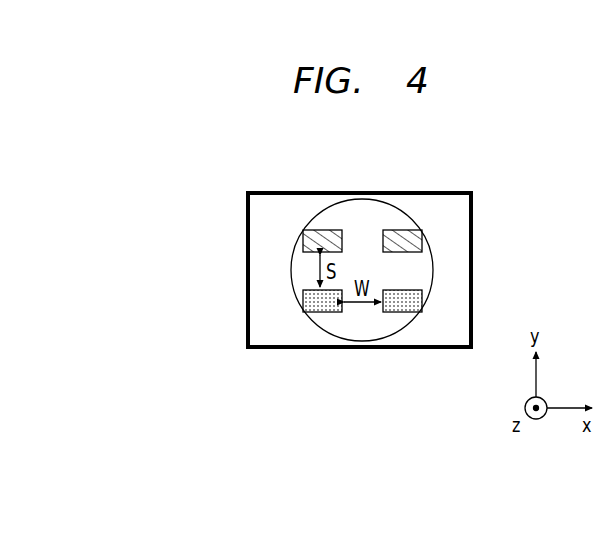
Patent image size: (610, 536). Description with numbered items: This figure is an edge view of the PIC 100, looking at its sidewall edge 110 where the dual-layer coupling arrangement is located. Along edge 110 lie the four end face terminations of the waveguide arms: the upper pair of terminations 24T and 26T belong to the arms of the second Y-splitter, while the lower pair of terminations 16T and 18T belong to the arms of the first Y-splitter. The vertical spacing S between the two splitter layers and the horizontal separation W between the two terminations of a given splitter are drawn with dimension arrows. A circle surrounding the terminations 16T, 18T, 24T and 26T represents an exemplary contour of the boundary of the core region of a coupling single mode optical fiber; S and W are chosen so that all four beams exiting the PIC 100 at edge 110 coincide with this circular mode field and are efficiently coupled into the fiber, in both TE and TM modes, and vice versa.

The PIC 100 is at (452, 191).
The sidewall edge 110 is at (466, 226).
The termination of waveguide arm 24 24T is at (322, 242).
The termination of waveguide arm 26 26T is at (412, 242).
The termination of waveguide arm 16 16T is at (315, 312).
The termination of waveguide arm 18 18T is at (407, 312).